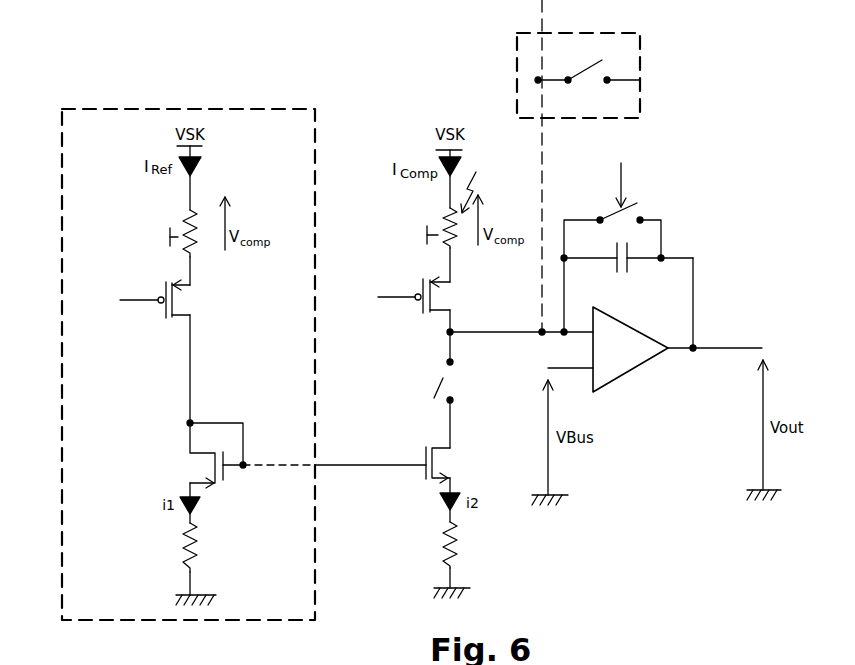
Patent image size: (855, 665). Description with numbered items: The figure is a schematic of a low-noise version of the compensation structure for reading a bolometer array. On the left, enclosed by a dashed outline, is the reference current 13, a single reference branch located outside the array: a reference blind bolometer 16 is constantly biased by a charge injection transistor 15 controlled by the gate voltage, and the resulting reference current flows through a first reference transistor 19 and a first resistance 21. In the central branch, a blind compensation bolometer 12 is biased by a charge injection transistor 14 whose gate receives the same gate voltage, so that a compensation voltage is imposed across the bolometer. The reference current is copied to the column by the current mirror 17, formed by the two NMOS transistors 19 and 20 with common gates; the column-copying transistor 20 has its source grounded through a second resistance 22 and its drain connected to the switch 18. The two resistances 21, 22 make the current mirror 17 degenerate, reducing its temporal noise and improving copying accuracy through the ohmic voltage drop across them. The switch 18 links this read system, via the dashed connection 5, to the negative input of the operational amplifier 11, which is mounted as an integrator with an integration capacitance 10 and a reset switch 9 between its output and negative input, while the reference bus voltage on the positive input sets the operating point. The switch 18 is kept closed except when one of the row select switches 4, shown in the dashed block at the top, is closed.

The row select switch 4 is at (590, 68).
The dashed connection line 5 is at (542, 157).
The reset switch 9 is at (612, 213).
The integration capacitance 10 is at (628, 263).
The operational amplifier 11 is at (632, 362).
The blind compensation bolometer 12 is at (458, 244).
The reference current 13 is at (265, 108).
The charge injection transistor 14 is at (440, 303).
The charge injection transistor 15 is at (180, 302).
The blind bolometer Rcomp-réf 16 is at (199, 245).
The current mirror 17 is at (356, 478).
The switch Lec 18 is at (443, 378).
The first reference transistor 19 is at (206, 467).
The column-copying transistor 20 is at (448, 465).
The resistance R1 21 is at (206, 553).
The resistance R2 22 is at (443, 556).